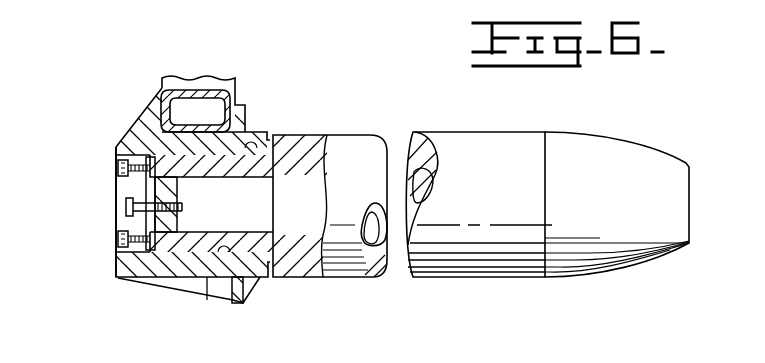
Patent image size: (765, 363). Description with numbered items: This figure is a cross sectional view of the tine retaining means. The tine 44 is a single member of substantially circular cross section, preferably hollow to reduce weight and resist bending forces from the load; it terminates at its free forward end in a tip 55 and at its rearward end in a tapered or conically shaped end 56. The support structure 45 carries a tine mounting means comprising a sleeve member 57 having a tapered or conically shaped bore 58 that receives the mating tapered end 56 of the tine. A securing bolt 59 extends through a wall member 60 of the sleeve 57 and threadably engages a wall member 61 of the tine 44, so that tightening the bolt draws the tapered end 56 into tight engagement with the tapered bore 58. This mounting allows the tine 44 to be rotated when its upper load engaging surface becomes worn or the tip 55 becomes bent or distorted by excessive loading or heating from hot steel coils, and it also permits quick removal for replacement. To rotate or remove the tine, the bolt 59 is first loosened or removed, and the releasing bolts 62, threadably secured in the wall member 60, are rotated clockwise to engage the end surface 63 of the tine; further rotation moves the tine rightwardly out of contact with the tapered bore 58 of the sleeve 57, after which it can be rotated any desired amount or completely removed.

The tine 44 is at (502, 201).
The support structure 45 is at (200, 82).
The tip 55 is at (623, 201).
The tapered end 56 is at (242, 141).
The sleeve member 57 is at (140, 142).
The tapered bore 58 is at (224, 256).
The bolt 59 is at (128, 205).
The wall member 60 is at (140, 187).
The wall member 61 is at (170, 192).
The releasing bolts 62 is at (118, 175).
The end surface 63 is at (143, 248).